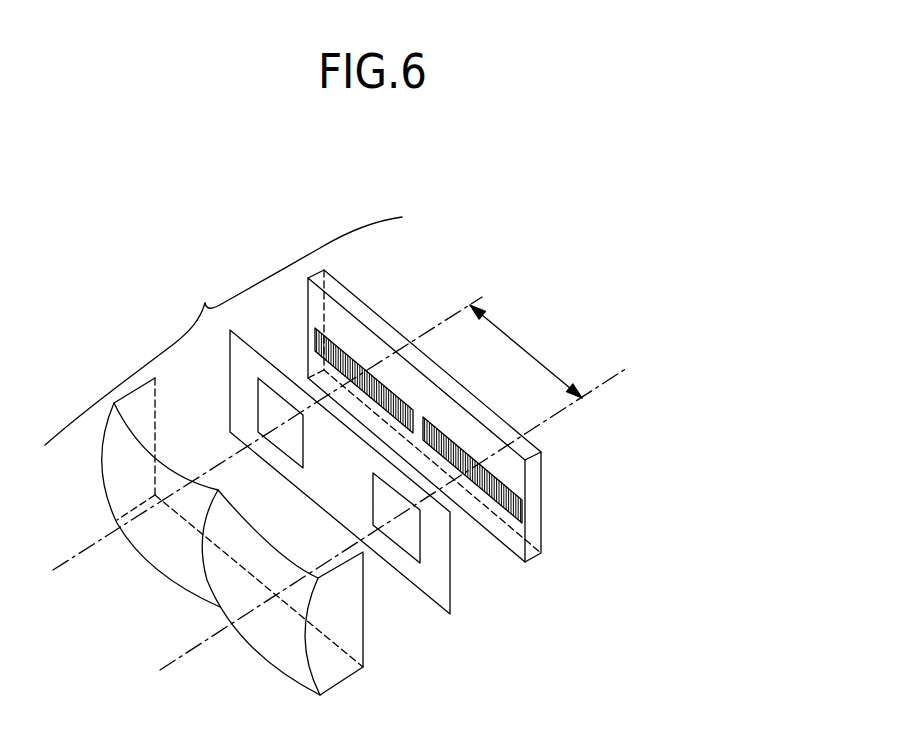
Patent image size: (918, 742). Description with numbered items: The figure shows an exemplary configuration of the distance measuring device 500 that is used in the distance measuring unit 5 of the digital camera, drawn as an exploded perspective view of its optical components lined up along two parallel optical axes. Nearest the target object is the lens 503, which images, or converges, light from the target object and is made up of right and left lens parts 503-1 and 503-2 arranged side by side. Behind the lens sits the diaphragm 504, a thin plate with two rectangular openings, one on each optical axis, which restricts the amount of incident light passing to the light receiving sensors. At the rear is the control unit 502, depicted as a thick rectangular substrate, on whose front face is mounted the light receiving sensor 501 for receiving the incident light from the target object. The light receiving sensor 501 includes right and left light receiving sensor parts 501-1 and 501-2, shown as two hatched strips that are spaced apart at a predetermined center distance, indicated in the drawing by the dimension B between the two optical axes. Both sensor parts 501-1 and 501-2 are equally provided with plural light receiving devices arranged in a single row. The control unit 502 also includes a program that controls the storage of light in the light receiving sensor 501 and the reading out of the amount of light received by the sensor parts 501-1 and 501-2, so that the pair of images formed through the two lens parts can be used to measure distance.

The distance measuring unit 5 is at (92, 196).
The distance measuring device 500 is at (223, 331).
The light receiving sensor 501 is at (572, 425).
The right light receiving sensor part 501-1 is at (364, 380).
The left light receiving sensor part 501-2 is at (415, 407).
The control unit 502 is at (543, 528).
The lens 503 is at (358, 549).
The right lens part 503-1 is at (161, 492).
The left lens part 503-2 is at (340, 683).
The diaphragm 504 is at (450, 613).